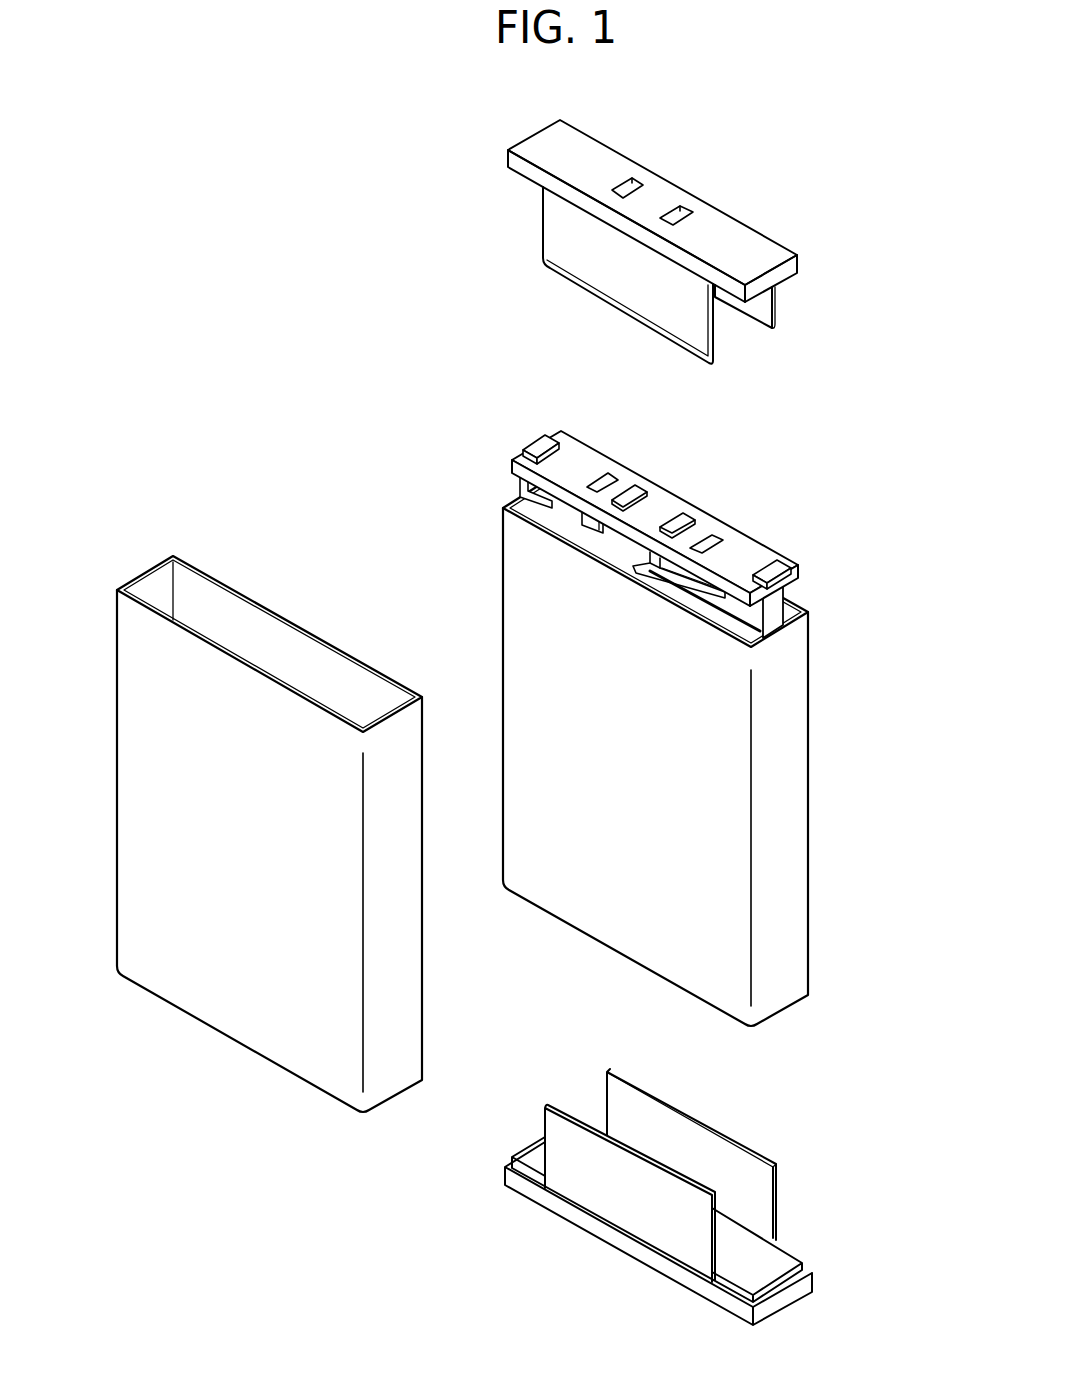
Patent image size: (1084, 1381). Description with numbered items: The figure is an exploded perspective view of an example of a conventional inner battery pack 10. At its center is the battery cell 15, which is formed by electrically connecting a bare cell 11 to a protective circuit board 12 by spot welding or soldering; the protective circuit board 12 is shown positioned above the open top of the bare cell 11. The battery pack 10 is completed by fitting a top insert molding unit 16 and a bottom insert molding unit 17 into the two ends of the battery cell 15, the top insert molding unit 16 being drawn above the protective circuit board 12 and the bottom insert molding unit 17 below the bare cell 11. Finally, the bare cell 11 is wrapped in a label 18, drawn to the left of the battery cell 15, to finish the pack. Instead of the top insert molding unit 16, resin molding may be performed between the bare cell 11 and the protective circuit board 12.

The inner battery pack 10 is at (285, 219).
The bare cell 11 is at (503, 592).
The protective circuit board 12 is at (751, 553).
The battery cell 15 is at (650, 728).
The top insert molding unit 16 is at (752, 242).
The bottom insert molding unit 17 is at (595, 1230).
The label 18 is at (245, 1008).